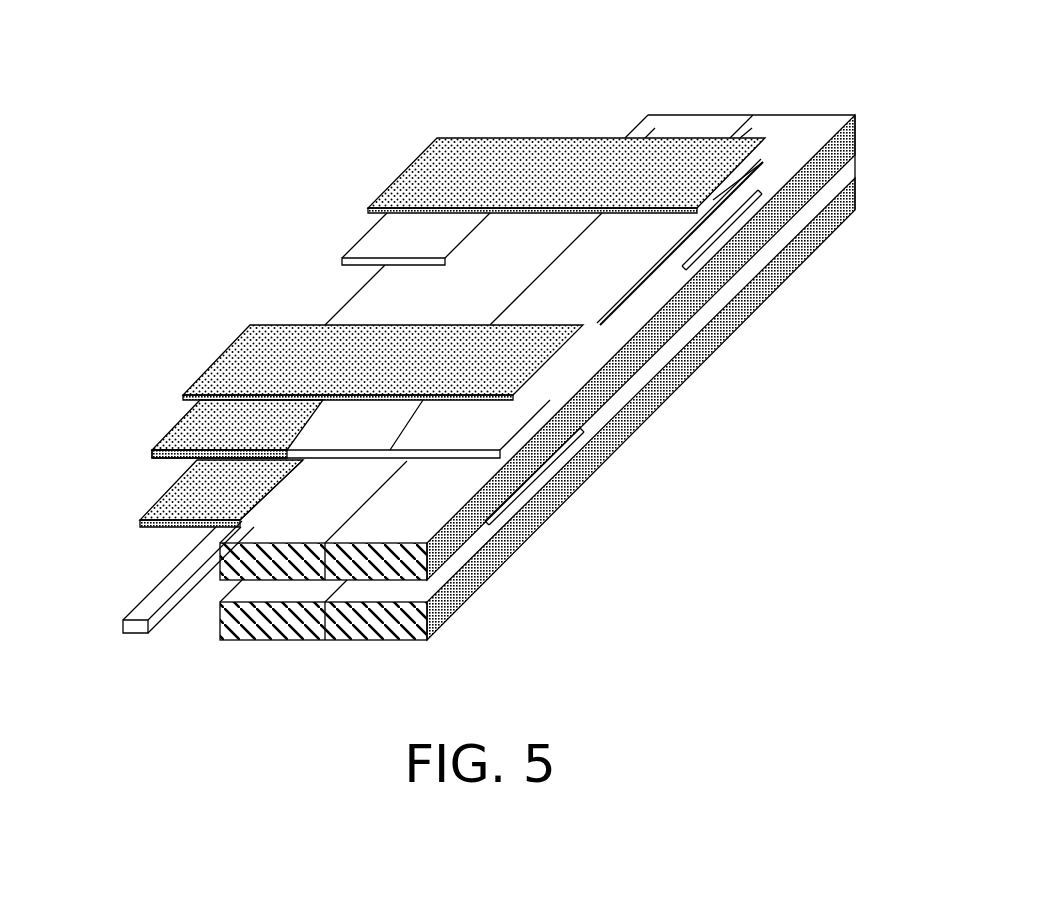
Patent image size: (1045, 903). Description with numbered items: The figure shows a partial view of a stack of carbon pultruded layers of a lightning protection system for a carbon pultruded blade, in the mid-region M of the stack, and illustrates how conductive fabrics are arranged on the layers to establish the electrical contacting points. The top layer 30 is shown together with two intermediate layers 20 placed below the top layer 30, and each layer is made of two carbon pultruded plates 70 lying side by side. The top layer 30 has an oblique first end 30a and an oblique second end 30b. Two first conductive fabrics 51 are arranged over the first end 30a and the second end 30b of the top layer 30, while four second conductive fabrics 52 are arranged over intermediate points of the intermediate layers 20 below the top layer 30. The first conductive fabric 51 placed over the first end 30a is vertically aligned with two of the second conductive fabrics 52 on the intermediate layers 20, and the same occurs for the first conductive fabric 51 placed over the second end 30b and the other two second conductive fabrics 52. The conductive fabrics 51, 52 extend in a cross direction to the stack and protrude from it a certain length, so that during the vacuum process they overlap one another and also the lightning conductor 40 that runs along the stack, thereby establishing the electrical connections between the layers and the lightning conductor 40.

The mid-region M is at (232, 175).
The intermediate layer 20 is at (830, 158).
The top layer 30 is at (603, 268).
The first end of the top layer 30a is at (543, 483).
The second end of the top layer 30b is at (764, 160).
The lightning conductor 40 is at (138, 615).
The first conductive fabric 51 is at (457, 168).
The second conductive fabric 52 is at (393, 247).
The carbon pultruded plate 70 is at (752, 128).